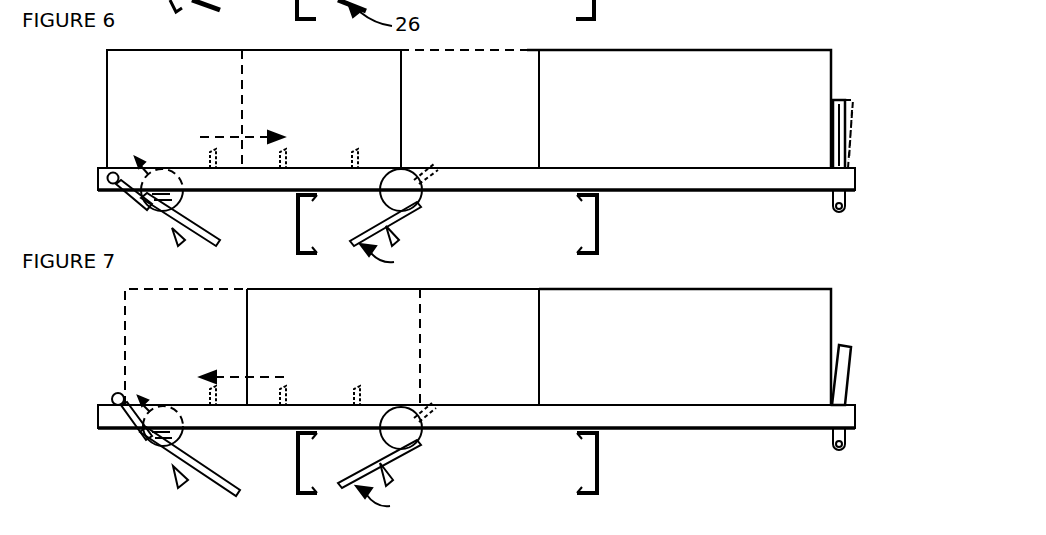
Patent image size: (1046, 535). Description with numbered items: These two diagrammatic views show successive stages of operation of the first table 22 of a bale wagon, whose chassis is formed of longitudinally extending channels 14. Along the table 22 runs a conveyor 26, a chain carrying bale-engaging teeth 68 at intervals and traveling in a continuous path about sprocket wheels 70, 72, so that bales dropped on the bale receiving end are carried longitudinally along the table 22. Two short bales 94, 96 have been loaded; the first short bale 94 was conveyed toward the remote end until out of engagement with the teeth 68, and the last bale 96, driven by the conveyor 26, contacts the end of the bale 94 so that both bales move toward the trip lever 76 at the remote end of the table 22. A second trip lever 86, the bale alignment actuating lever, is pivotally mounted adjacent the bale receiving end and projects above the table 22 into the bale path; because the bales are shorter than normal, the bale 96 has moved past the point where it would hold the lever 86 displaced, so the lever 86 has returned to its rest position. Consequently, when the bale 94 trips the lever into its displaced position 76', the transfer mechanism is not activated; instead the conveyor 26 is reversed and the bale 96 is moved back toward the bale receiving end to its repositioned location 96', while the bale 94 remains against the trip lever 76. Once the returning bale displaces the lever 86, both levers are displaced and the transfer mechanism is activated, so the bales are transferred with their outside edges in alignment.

In FIG. 6, the longitudinally extending channel 14 is at (295, 241).
In FIG. 7, the longitudinally extending channel 14 is at (295, 473).
In FIG. 6, the first table 22 is at (760, 190).
In FIG. 7, the first table 22 is at (760, 428).
In FIG. 6, the conveyor 26 is at (390, 259).
In FIG. 7, the conveyor 26 is at (386, 505).
In FIG. 6, the bale-engaging teeth 68 is at (354, 148).
In FIG. 7, the bale-engaging teeth 68 is at (360, 386).
In FIG. 6, the sprocket wheel 70 is at (180, 204).
In FIG. 7, the sprocket wheel 70 is at (182, 438).
In FIG. 6, the sprocket wheel 72 is at (420, 200).
In FIG. 7, the sprocket wheel 72 is at (420, 439).
In FIG. 6, the trip lever 76 is at (863, 156).
In FIG. 7, the trip lever 76 is at (871, 397).
In FIG. 6, the trip lever (displaced position) 76' is at (872, 115).
In FIG. 6, the second trip lever 86 is at (136, 205).
In FIG. 7, the second trip lever 86 is at (134, 436).
In FIG. 6, the first short bale 94 is at (692, 40).
In FIG. 7, the first short bale 94 is at (696, 289).
In FIG. 6, the last bale 96 is at (317, 92).
In FIG. 7, the last bale 96 is at (393, 329).
In FIG. 7, the last bale (repositioned) 96' is at (186, 329).